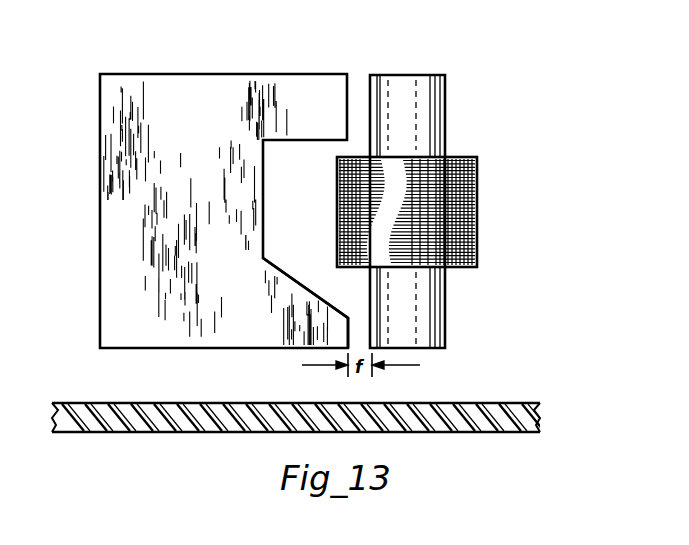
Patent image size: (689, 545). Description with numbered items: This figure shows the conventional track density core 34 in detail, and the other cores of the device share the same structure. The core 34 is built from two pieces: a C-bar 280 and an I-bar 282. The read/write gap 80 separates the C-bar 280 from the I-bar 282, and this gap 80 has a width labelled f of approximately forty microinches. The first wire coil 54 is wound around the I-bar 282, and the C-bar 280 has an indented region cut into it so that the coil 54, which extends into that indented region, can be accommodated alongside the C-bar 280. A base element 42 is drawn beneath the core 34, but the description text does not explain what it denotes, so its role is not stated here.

The conventional track density core 34 is at (262, 74).
The C-bar 280 is at (222, 152).
The read/write gap 80 is at (362, 338).
The I-bar 282 is at (440, 122).
The first wire coil 54 is at (478, 211).
The base plate 42 is at (445, 433).